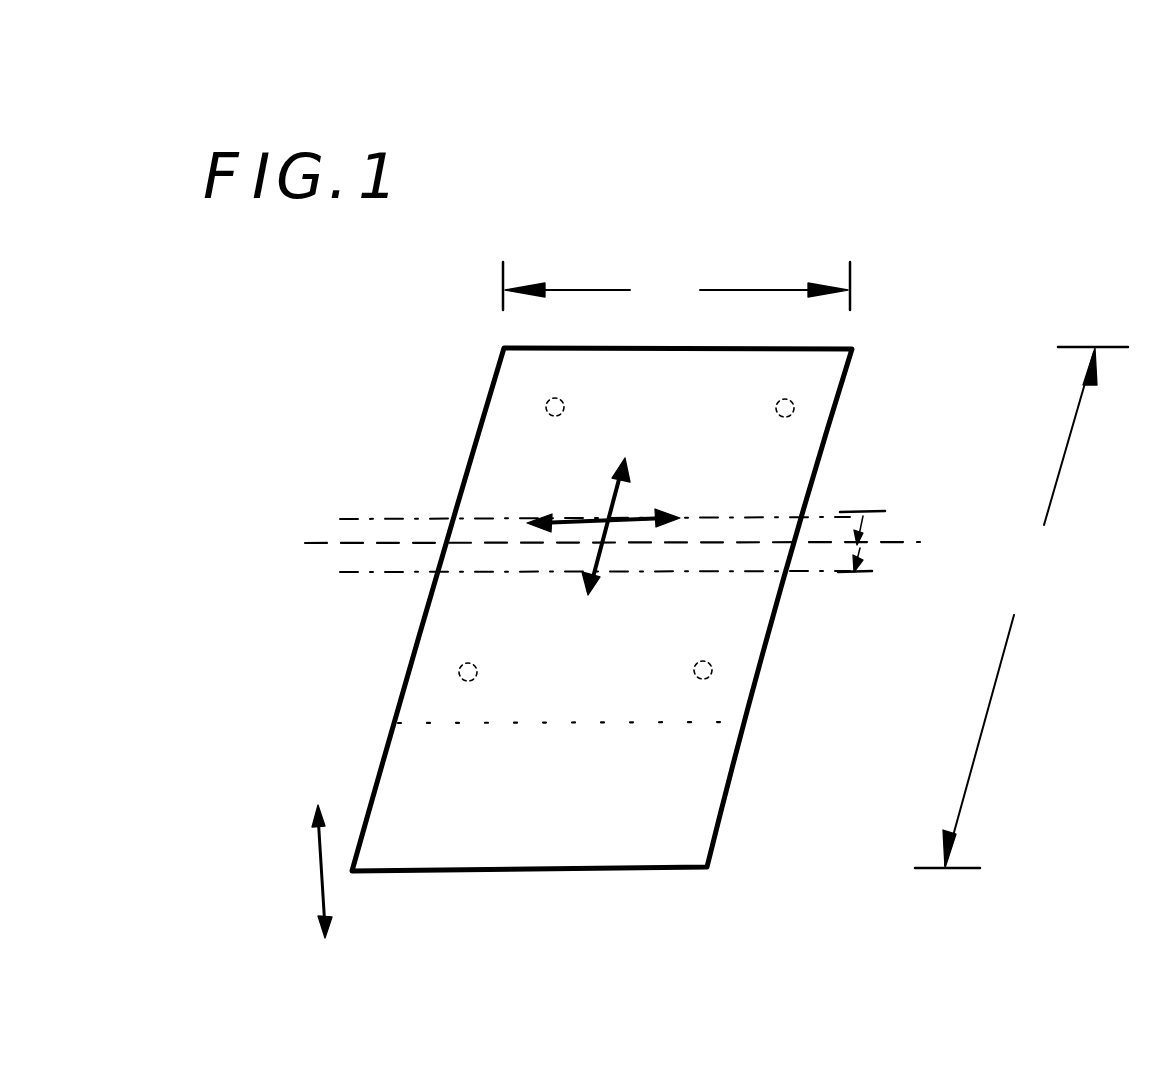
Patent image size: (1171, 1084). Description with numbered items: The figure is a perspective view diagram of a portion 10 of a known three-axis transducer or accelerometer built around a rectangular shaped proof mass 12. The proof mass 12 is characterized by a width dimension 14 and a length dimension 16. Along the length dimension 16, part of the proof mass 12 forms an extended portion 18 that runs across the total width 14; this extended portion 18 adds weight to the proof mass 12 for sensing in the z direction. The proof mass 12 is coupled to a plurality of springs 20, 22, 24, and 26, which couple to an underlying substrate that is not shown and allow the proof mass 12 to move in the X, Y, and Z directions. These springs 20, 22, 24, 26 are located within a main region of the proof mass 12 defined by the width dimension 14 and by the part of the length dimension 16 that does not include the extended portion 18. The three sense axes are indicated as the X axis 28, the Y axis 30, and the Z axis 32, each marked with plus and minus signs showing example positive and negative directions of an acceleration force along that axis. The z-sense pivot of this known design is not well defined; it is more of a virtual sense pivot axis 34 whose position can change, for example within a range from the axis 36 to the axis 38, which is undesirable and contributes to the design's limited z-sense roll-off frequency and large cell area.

The portion of a three-axis transducer/accelerometer 10 is at (990, 264).
The rectangular shaped proof mass 12 is at (478, 432).
The width dimension 14 is at (676, 286).
The length dimension 16 is at (1021, 607).
The extended portion 18 is at (765, 727).
The spring 20 is at (564, 402).
The spring 22 is at (794, 404).
The spring 24 is at (712, 664).
The spring 26 is at (460, 672).
The X axis 28 is at (648, 508).
The Y axis 30 is at (605, 495).
The Z axis 32 is at (318, 892).
The virtual z-sense pivot axis 34 is at (915, 545).
The axis 36 is at (860, 510).
The axis 38 is at (845, 575).